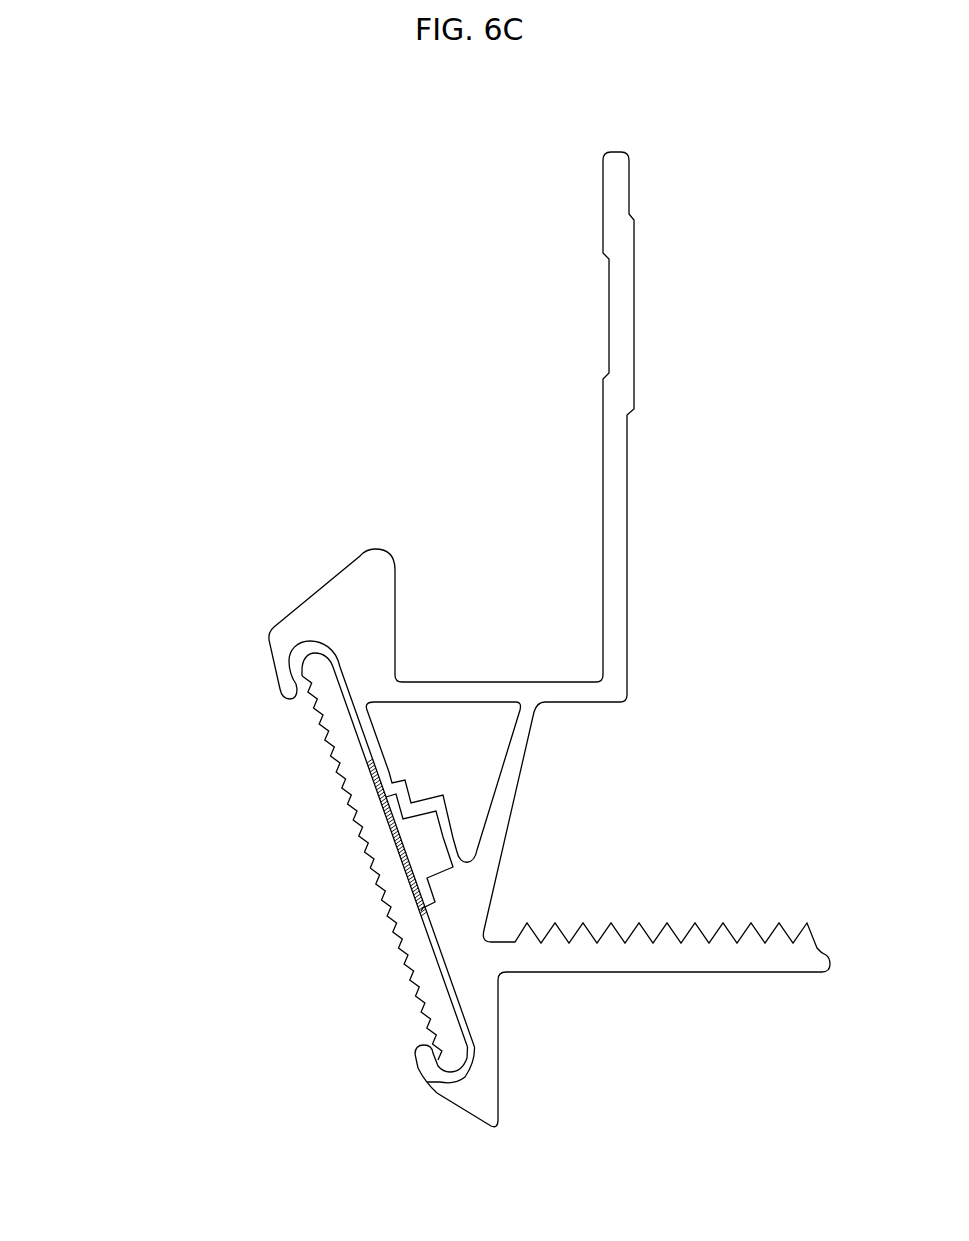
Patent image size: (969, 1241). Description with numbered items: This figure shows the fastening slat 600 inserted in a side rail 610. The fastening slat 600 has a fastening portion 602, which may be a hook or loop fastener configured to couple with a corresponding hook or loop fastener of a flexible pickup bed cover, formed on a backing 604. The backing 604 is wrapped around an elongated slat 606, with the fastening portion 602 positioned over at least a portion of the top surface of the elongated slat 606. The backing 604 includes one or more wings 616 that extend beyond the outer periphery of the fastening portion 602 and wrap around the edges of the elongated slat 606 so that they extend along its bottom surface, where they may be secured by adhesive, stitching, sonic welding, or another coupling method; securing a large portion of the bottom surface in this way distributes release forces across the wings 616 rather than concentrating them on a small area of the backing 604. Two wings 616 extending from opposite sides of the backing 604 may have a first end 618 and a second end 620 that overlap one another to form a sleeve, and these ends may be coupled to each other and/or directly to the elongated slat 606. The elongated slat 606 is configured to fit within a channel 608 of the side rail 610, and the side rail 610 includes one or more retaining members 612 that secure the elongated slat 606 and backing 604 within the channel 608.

The fastening slat 600 is at (164, 956).
The fastening portion 602 is at (320, 785).
The backing 604 is at (485, 1056).
The elongated slat 606 is at (402, 959).
The channel 608 is at (430, 860).
The side rail 610 is at (333, 595).
The retaining members 612 is at (413, 1082).
The wings 616 is at (362, 698).
The first end 618 is at (380, 776).
The second end 620 is at (391, 892).